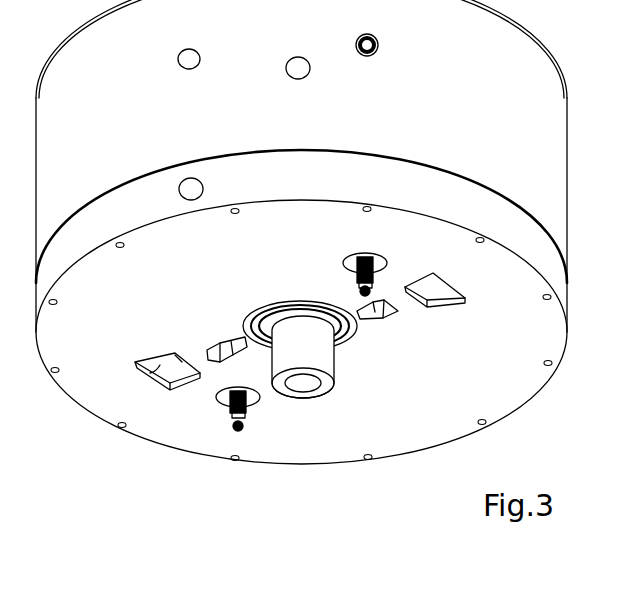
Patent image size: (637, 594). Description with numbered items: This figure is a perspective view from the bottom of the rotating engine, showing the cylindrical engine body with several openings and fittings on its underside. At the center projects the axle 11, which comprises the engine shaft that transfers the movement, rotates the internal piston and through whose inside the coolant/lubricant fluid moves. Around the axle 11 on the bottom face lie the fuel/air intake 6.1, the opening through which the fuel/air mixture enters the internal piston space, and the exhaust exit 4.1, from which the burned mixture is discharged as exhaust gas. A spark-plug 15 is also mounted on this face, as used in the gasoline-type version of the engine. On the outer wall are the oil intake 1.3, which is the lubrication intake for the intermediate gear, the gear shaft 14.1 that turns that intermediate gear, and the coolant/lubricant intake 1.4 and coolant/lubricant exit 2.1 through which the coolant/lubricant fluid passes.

The oil intake 1.3 is at (298, 68).
The coolant/lubricant intake 1.4 is at (198, 54).
The gear shaft 14.1 is at (378, 45).
The coolant/lubricant exit 2.1 is at (203, 188).
The exhaust exit 4.1 is at (443, 291).
The fuel/air intake 6.1 is at (384, 320).
The axle 11 is at (334, 375).
The spark-plug 15 is at (250, 417).